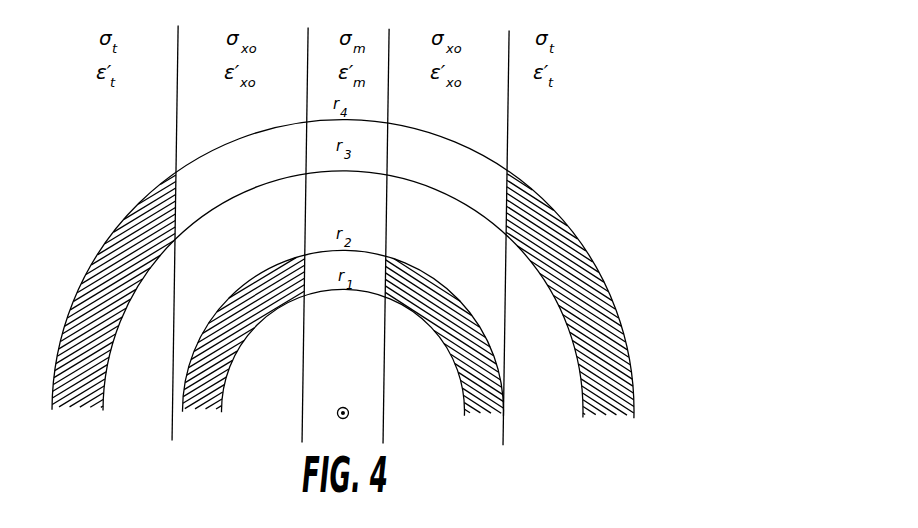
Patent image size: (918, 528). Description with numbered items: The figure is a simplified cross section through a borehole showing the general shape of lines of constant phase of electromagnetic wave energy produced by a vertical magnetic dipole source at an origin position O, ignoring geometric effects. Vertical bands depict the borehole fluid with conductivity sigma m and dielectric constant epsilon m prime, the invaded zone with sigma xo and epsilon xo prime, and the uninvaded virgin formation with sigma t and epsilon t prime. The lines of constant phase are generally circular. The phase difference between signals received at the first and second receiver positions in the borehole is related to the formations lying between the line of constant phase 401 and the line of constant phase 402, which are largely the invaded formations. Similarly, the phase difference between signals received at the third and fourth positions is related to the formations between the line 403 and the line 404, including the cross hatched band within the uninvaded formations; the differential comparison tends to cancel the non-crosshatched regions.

The line of constant phase 401 is at (399, 304).
The line of constant phase 402 is at (433, 278).
The line of constant phase 403 is at (416, 183).
The line of constant phase 404 is at (441, 137).